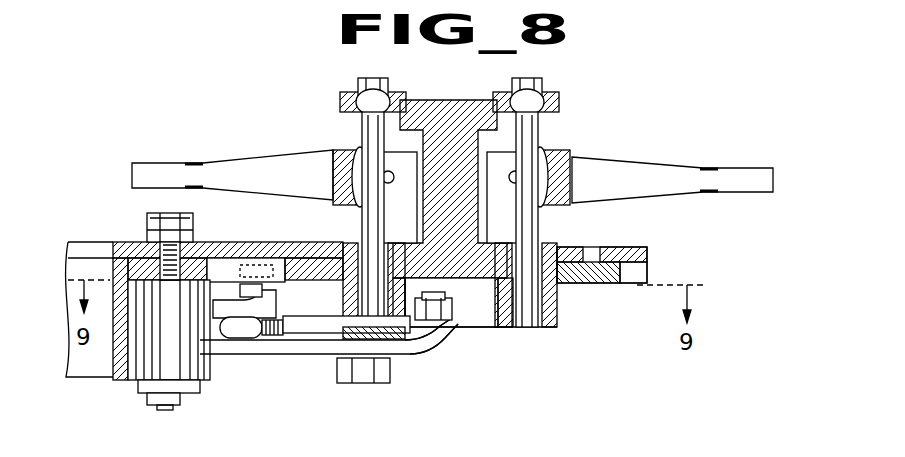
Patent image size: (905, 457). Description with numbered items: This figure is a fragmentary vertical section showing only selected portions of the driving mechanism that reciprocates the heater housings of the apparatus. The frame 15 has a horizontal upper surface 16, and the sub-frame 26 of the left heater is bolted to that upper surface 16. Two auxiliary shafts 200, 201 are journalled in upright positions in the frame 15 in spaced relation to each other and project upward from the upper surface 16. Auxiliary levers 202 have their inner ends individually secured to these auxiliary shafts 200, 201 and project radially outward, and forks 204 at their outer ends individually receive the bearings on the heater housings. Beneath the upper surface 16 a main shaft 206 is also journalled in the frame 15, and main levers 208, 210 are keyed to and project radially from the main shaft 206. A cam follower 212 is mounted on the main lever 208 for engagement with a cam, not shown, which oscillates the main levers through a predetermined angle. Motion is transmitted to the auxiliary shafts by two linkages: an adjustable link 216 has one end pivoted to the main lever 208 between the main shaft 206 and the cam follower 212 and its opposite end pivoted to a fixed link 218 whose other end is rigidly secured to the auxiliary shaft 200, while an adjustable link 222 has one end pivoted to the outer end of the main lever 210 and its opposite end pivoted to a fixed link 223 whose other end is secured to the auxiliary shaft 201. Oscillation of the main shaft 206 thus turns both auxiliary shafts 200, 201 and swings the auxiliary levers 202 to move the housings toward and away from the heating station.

The frame 15 is at (92, 368).
The horizontal upper surface 16 is at (313, 258).
The sub-frame 26 is at (128, 242).
The auxiliary shaft 200 is at (366, 113).
The auxiliary shaft 201 is at (562, 115).
The auxiliary lever 202 is at (272, 183).
The fork 204 is at (133, 163).
The main shaft 206 is at (172, 410).
The main lever 208 is at (262, 296).
The main lever 210 is at (232, 352).
The cam follower 212 is at (283, 334).
The adjustable link 216 is at (317, 340).
The fixed link 218 is at (447, 320).
The adjustable link 222 is at (353, 383).
The fixed link 223 is at (422, 347).